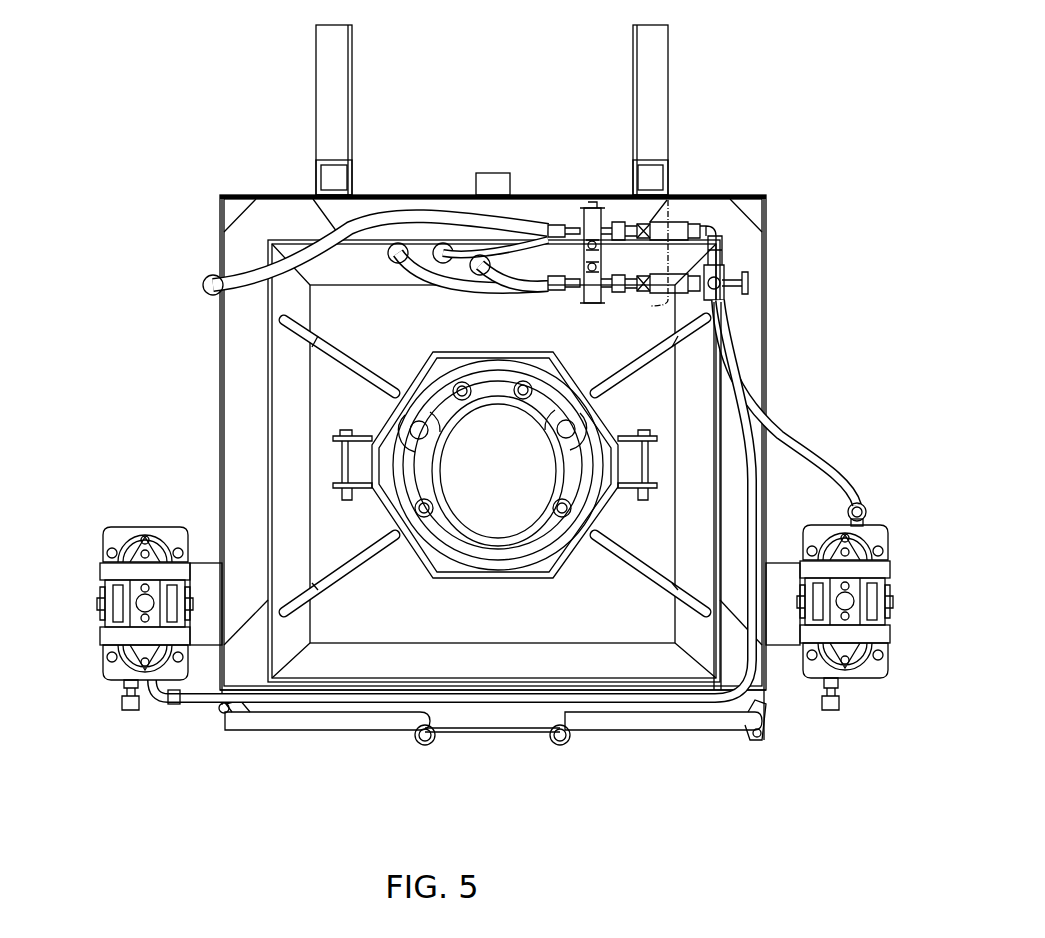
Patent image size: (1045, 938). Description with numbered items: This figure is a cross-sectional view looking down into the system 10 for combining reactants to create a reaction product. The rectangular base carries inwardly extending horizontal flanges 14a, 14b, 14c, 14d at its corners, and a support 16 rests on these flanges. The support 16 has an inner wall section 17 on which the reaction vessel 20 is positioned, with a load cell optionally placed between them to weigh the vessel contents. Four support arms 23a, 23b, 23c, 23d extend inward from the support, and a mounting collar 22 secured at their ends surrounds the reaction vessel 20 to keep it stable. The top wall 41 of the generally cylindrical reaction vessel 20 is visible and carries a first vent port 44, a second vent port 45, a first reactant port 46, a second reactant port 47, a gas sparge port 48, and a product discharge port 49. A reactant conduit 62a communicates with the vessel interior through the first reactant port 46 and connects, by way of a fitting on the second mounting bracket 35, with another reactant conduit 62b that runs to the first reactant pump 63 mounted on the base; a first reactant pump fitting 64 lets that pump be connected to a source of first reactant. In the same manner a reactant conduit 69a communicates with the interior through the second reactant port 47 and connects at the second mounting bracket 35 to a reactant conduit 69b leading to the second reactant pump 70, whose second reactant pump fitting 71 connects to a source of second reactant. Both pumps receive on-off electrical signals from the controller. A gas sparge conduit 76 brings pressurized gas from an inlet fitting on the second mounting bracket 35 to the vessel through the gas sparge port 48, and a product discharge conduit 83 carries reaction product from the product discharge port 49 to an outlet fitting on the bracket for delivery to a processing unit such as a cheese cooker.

The system 10 is at (96, 270).
The horizontal flange 14a is at (260, 213).
The horizontal flange 14b is at (251, 625).
The horizontal flange 14c is at (727, 653).
The horizontal flange 14d is at (718, 207).
The support 16 is at (285, 418).
The inner wall section 17 is at (380, 325).
The reaction vessel 20 is at (450, 352).
The mounting collar 22 is at (548, 356).
The support arm 23a is at (355, 376).
The support arm 23b is at (345, 575).
The support arm 23c is at (625, 553).
The support arm 23d is at (618, 365).
The second mounting bracket 35 is at (672, 208).
The top wall 41 is at (450, 540).
The first vent port 44 is at (432, 507).
The second vent port 45 is at (556, 500).
The first reactant port 46 is at (465, 401).
The second reactant port 47 is at (425, 442).
The gas sparge port 48 is at (521, 400).
The product discharge port 49 is at (578, 423).
The reactant conduit 62a is at (436, 272).
The reactant conduit 62b is at (212, 705).
The first reactant pump 63 is at (110, 680).
The first reactant pump fitting 64 is at (131, 712).
The reactant conduit 69a is at (213, 282).
The reactant conduit 69b is at (815, 447).
The second reactant pump 70 is at (885, 545).
The second reactant pump fitting 71 is at (838, 704).
The gas sparge conduit 76 is at (512, 235).
The product discharge conduit 83 is at (530, 284).